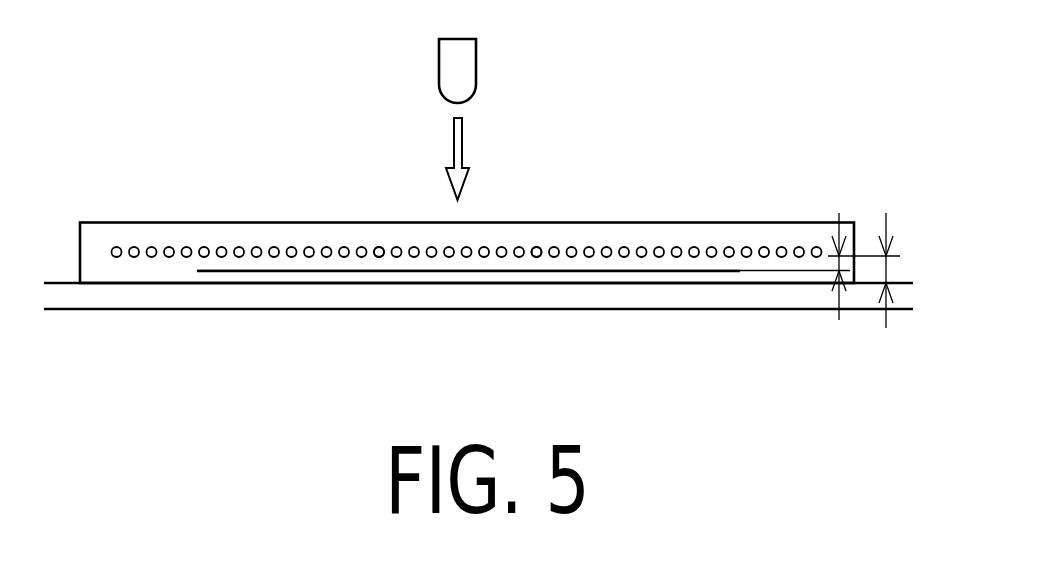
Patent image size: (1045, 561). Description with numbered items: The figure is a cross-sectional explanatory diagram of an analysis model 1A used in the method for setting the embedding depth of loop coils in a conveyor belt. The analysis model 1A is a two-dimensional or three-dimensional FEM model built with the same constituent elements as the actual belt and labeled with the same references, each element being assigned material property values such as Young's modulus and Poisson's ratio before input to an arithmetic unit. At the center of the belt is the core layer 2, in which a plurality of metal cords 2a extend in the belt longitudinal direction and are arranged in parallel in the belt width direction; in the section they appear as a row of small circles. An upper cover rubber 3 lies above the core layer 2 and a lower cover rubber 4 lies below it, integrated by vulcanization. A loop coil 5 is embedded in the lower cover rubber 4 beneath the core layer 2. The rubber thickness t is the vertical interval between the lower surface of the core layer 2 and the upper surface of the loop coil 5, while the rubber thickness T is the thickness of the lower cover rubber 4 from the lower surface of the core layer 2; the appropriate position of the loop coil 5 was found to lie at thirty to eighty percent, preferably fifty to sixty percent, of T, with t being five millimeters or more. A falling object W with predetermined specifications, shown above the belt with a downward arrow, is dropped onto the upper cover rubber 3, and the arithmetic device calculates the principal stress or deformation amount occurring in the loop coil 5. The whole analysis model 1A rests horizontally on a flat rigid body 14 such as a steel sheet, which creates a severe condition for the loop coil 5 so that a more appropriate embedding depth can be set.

The falling object W is at (470, 72).
The analysis model 1A is at (758, 225).
The core layer 2 is at (661, 246).
The metal cord 2a is at (378, 247).
The upper cover rubber 3 is at (301, 238).
The lower cover rubber 4 is at (150, 267).
The loop coil 5 is at (273, 271).
The rigid body 14 is at (438, 298).
The rubber thickness t is at (842, 259).
The rubber thickness T is at (887, 267).